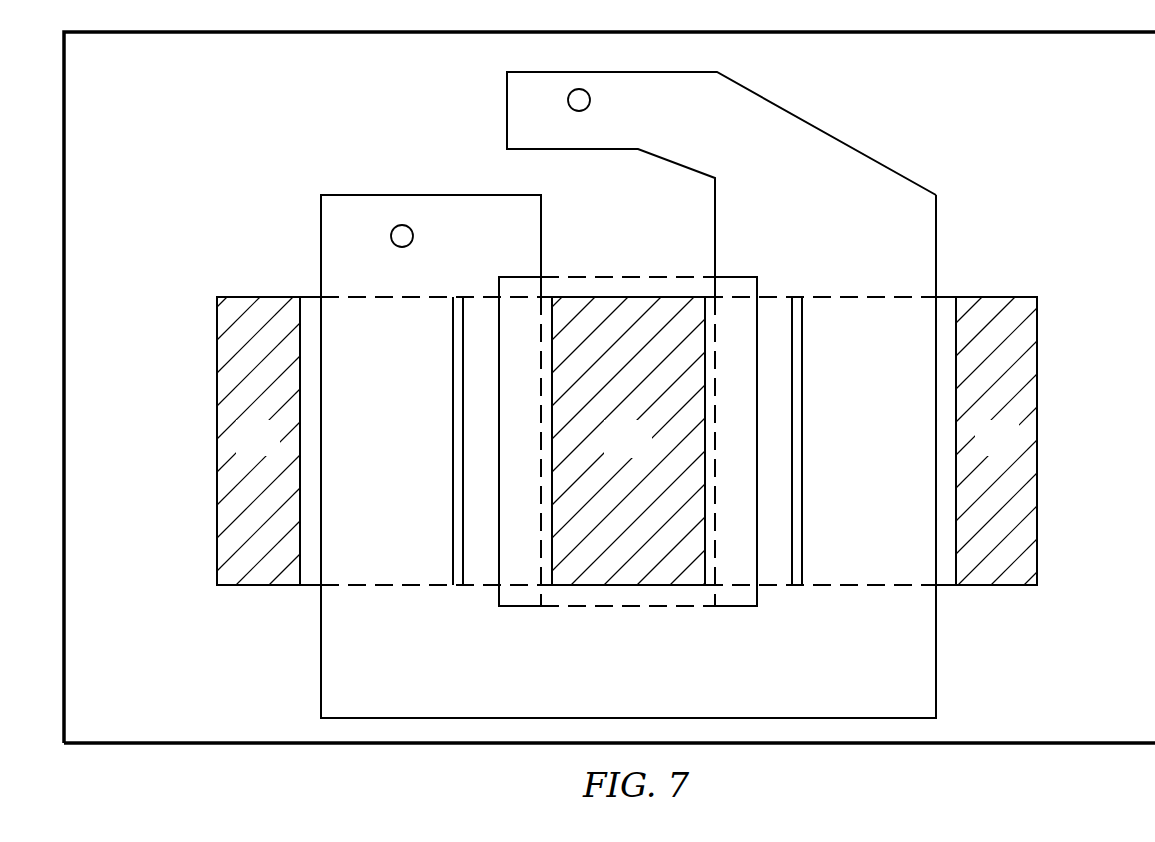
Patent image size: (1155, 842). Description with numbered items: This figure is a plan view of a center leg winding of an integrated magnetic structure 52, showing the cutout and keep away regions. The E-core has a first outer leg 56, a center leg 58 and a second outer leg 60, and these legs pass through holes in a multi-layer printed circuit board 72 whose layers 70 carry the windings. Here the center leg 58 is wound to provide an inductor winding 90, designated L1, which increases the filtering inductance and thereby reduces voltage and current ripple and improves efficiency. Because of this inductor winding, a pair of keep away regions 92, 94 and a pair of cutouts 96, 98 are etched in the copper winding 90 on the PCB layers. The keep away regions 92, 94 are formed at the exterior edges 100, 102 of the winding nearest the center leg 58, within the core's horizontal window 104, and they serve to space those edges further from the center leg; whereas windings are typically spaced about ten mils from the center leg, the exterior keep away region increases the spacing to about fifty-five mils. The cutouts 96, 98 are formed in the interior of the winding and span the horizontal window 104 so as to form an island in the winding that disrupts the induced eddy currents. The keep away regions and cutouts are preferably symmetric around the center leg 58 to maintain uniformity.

The integrated magnetic structure 52 is at (641, 432).
The first outer leg 56 is at (244, 452).
The center leg 58 is at (614, 453).
The second outer leg 60 is at (983, 452).
The layers 70 is at (188, 732).
The multi-layer printed circuit board 72 is at (367, 736).
The inductor winding 90 is at (790, 128).
The keep away region 92 is at (527, 322).
The keep away region 94 is at (728, 322).
The cutout 96 is at (453, 357).
The cutout 98 is at (803, 357).
The exterior edge 100 is at (540, 547).
The exterior edge 102 is at (713, 547).
The horizontal window 104 is at (378, 297).